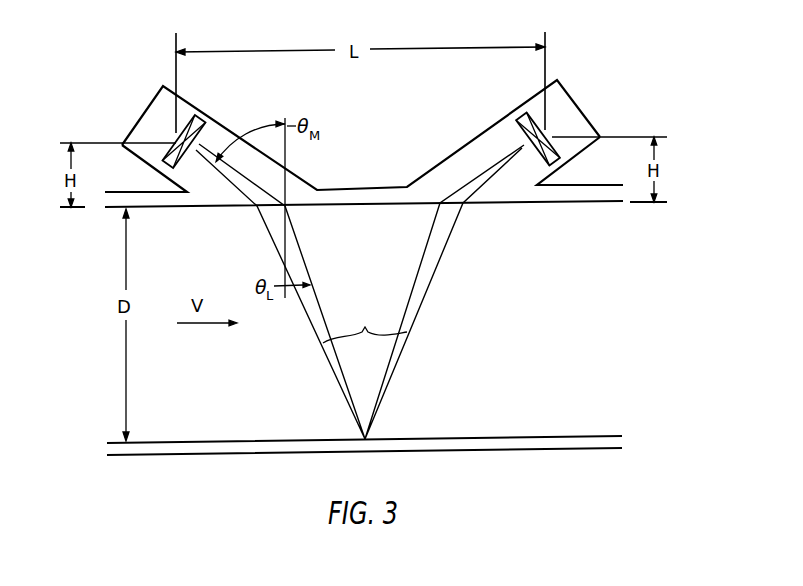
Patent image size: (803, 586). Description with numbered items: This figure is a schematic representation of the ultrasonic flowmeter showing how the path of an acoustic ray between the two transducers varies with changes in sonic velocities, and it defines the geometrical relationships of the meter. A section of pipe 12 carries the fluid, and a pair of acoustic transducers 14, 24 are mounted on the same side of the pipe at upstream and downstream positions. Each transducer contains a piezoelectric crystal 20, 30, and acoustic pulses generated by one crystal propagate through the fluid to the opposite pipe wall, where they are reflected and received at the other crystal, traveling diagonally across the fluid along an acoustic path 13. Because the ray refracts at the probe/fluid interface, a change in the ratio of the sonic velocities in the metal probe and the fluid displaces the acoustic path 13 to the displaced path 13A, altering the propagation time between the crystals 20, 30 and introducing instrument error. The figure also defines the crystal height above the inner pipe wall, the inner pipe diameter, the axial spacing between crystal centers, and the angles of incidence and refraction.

The pipe 12 is at (580, 437).
The acoustic path 13 is at (410, 296).
The displaced acoustic path 13A is at (365, 325).
The acoustic transducer 14 is at (136, 115).
The crystal 20 is at (201, 122).
The acoustic transducer 24 is at (578, 100).
The crystal 30 is at (524, 110).